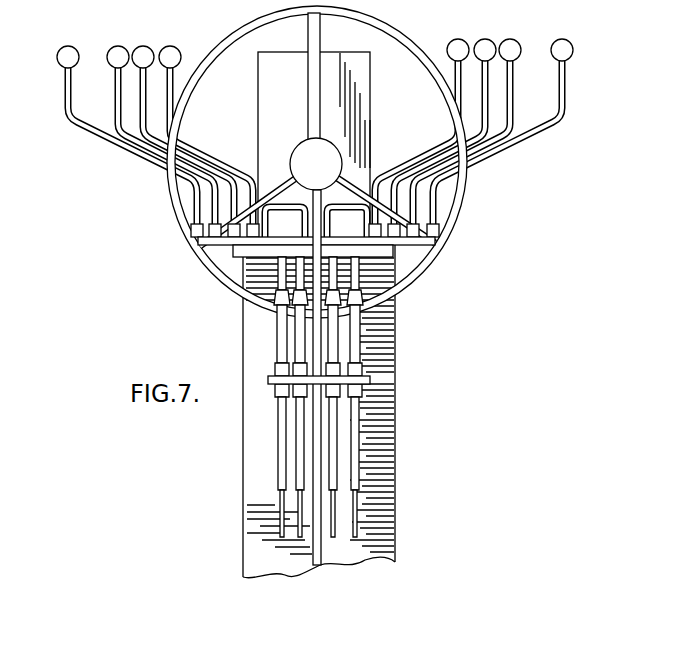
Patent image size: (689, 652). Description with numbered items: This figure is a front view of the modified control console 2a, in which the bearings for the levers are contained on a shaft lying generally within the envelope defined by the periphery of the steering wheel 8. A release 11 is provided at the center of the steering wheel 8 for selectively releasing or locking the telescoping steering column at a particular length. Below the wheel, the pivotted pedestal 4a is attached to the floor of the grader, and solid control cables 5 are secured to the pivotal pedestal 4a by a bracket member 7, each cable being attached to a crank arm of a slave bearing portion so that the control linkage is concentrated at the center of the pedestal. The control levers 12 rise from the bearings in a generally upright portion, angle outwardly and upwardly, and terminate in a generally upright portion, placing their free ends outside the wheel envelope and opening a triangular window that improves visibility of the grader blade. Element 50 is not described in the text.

The modified control console 2a is at (545, 252).
The pivotted pedestal 4a is at (396, 401).
The solid control cables 5 is at (297, 446).
The bracket member 7 is at (371, 379).
The steering wheel 8 is at (217, 277).
The release 11 is at (294, 155).
The control levers 12 is at (170, 100).
The central shaft 50 is at (325, 550).